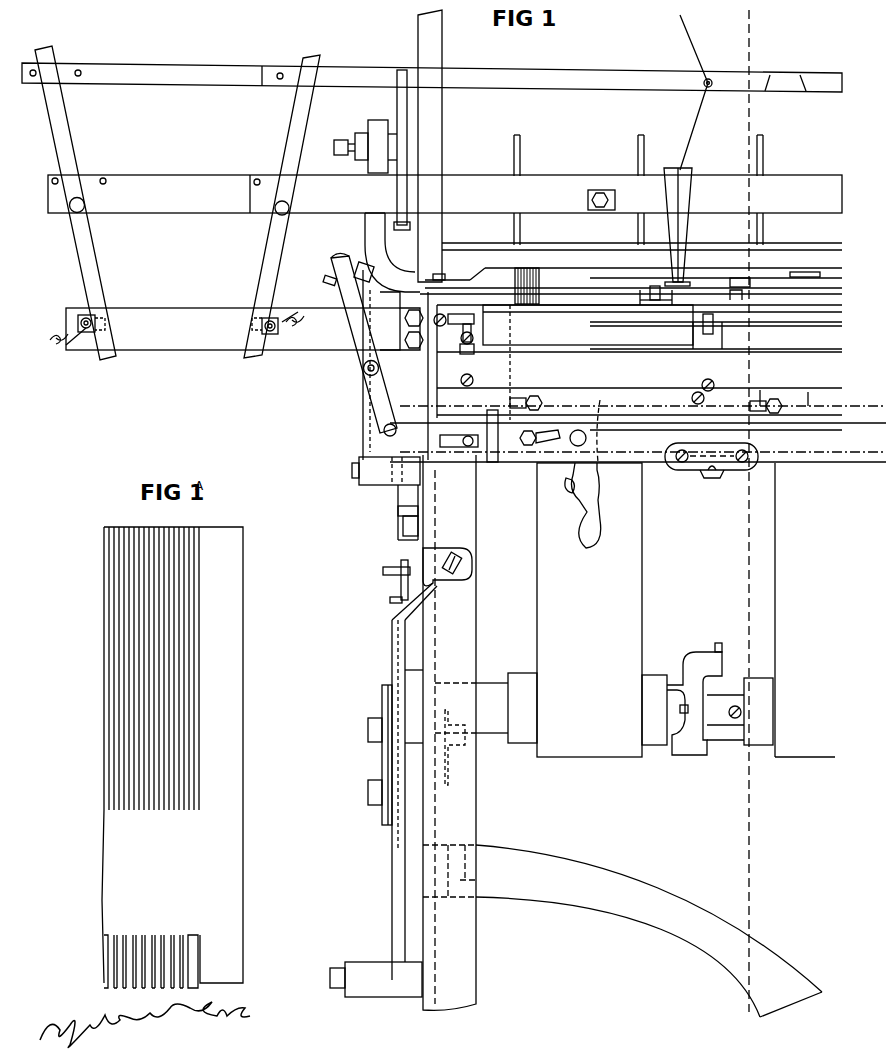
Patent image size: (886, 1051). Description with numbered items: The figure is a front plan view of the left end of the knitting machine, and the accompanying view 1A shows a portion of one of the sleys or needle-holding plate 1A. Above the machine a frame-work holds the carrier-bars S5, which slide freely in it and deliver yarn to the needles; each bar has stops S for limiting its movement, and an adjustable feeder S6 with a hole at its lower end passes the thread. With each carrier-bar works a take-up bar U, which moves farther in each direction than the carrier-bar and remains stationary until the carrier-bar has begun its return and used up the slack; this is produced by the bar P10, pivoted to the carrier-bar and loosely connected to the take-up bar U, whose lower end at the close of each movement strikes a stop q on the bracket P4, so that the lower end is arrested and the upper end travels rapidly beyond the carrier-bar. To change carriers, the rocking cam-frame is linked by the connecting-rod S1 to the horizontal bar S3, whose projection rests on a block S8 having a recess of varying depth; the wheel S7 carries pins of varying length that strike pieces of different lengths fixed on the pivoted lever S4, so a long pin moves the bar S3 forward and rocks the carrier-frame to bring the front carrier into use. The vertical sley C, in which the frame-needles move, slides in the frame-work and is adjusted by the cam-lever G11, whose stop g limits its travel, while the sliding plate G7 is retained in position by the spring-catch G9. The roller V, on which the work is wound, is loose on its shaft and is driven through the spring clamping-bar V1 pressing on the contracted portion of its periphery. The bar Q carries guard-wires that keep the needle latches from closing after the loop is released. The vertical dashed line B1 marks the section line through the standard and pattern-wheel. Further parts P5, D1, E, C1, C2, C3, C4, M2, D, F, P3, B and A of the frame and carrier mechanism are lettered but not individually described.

In FIG. 1, the take-up bar U is at (432, 77).
In FIG. 1, the bar P10 is at (177, 203).
In FIG. 1, the bracket P4 is at (445, 262).
In FIG. 1, the stop q is at (78, 330).
In FIG. 1, the connecting-rod S1 is at (414, 146).
In FIG. 1, the stops S is at (365, 146).
In FIG. 1, the carrier-bars S5 is at (525, 213).
In FIG. 1, the section line B1 is at (749, 511).
In FIG. 1, the adjustable feeder S6 is at (681, 150).
In FIG. 1, the top plate P5 is at (631, 284).
In FIG. 1, the toothed block E is at (528, 286).
In FIG. 1, the guide D1 is at (639, 297).
In FIG. 1, the carrier bar C2 is at (639, 362).
In FIG. 1, the guard-wire bar Q is at (716, 331).
In FIG. 1, the carrier arm C1 is at (722, 299).
In FIG. 1, the plate M2 is at (776, 286).
In FIG. 1, the bracket D is at (439, 376).
In FIG. 1, the vertical sley C is at (643, 386).
In FIG. 1, the bolt C4 is at (574, 399).
In FIG. 1, the screw fastening C3 is at (750, 396).
In FIG. 1, the main beam B is at (638, 436).
In FIG. 1, the slot F is at (459, 442).
In FIG. 1, the lever P3 is at (371, 356).
In FIG. 1, the horizontal bar S3 is at (382, 455).
In FIG. 1, the block S8 is at (395, 512).
In FIG. 1, the pattern wheel S7 is at (391, 581).
In FIG. 1, the column A is at (613, 736).
In FIG. 1, the pivoted lever S4 is at (383, 790).
In FIG. 1, the roller V is at (655, 610).
In FIG. 1, the spring clamping-bar V1 is at (720, 699).
In FIG. 1, the sliding plate G7 is at (737, 450).
In FIG. 1, the spring-catch G9 is at (712, 479).
In FIG. 1, the cam-lever G11 is at (585, 474).
In FIG. 1, the stop g is at (560, 503).
In FIG. 1A, the sley or needle-holding plate 1A is at (172, 757).